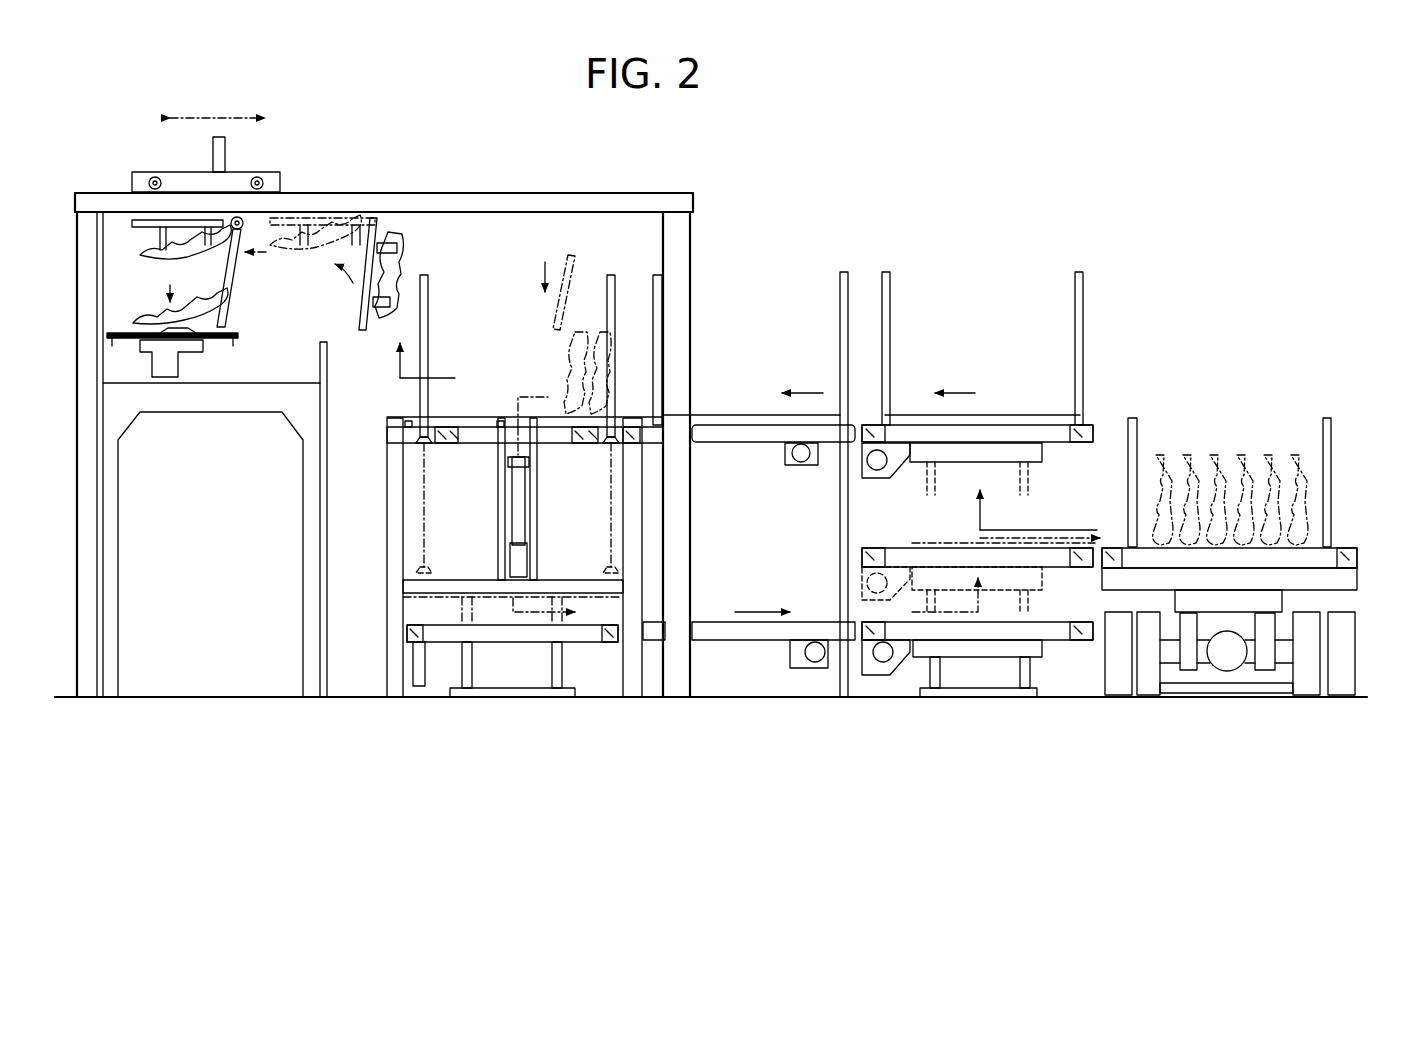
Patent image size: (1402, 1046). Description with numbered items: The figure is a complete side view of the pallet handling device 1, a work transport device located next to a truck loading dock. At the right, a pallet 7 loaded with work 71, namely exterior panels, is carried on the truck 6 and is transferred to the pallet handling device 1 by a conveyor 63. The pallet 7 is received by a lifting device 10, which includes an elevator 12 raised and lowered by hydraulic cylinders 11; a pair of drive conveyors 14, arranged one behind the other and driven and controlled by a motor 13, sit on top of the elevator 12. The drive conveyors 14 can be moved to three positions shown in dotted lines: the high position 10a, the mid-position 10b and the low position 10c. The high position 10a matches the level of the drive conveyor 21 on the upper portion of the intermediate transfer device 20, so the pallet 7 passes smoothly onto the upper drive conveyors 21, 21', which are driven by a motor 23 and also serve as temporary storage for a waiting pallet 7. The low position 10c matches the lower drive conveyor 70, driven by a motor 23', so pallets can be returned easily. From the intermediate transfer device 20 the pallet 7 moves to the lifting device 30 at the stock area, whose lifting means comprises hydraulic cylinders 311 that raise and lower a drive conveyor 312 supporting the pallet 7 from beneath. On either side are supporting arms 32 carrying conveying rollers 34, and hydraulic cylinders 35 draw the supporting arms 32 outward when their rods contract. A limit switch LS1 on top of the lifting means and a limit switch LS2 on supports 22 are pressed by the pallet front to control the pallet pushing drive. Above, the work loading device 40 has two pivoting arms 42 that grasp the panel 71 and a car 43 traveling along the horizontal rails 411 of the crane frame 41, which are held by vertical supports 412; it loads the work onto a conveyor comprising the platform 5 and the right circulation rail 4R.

The pallet handling device 1 is at (797, 166).
The right circulation rail 4R is at (190, 368).
The platform 5 is at (238, 335).
The truck 6 is at (1355, 653).
The pallet 7 is at (381, 503).
The lifting device 10 is at (963, 316).
The high position 10a is at (1040, 447).
The mid-position 10b is at (1046, 568).
The low position 10c is at (1060, 642).
The hydraulic cylinders 11 is at (930, 672).
The elevator 12 is at (1000, 650).
The motor 13 is at (880, 660).
The drive conveyors 14 is at (1030, 438).
The intermediate transfer device 20 is at (760, 316).
The drive conveyor 21 is at (773, 399).
The drive conveyor 21' is at (875, 374).
The supports 22 is at (385, 553).
The motor 23 is at (774, 467).
The motor 23' is at (791, 687).
The lifting device 30 is at (523, 296).
The supporting arms 32 is at (497, 476).
The conveying rollers 34 is at (594, 436).
The hydraulic cylinders 35 is at (525, 517).
The work loading device 40 is at (268, 165).
The crane frame 41 is at (398, 193).
The pivoting arms 42 is at (158, 225).
The car 43 is at (170, 178).
The conveyor 63 is at (1352, 548).
The drive conveyor 70 is at (748, 640).
The work 71 is at (397, 270).
The hydraulic cylinders 311 is at (462, 670).
The drive conveyor 312 is at (594, 645).
The rails 411 is at (548, 197).
The vertical supports 412 is at (690, 274).
The limit switch LS1 is at (498, 421).
The limit switch LS2 is at (406, 420).